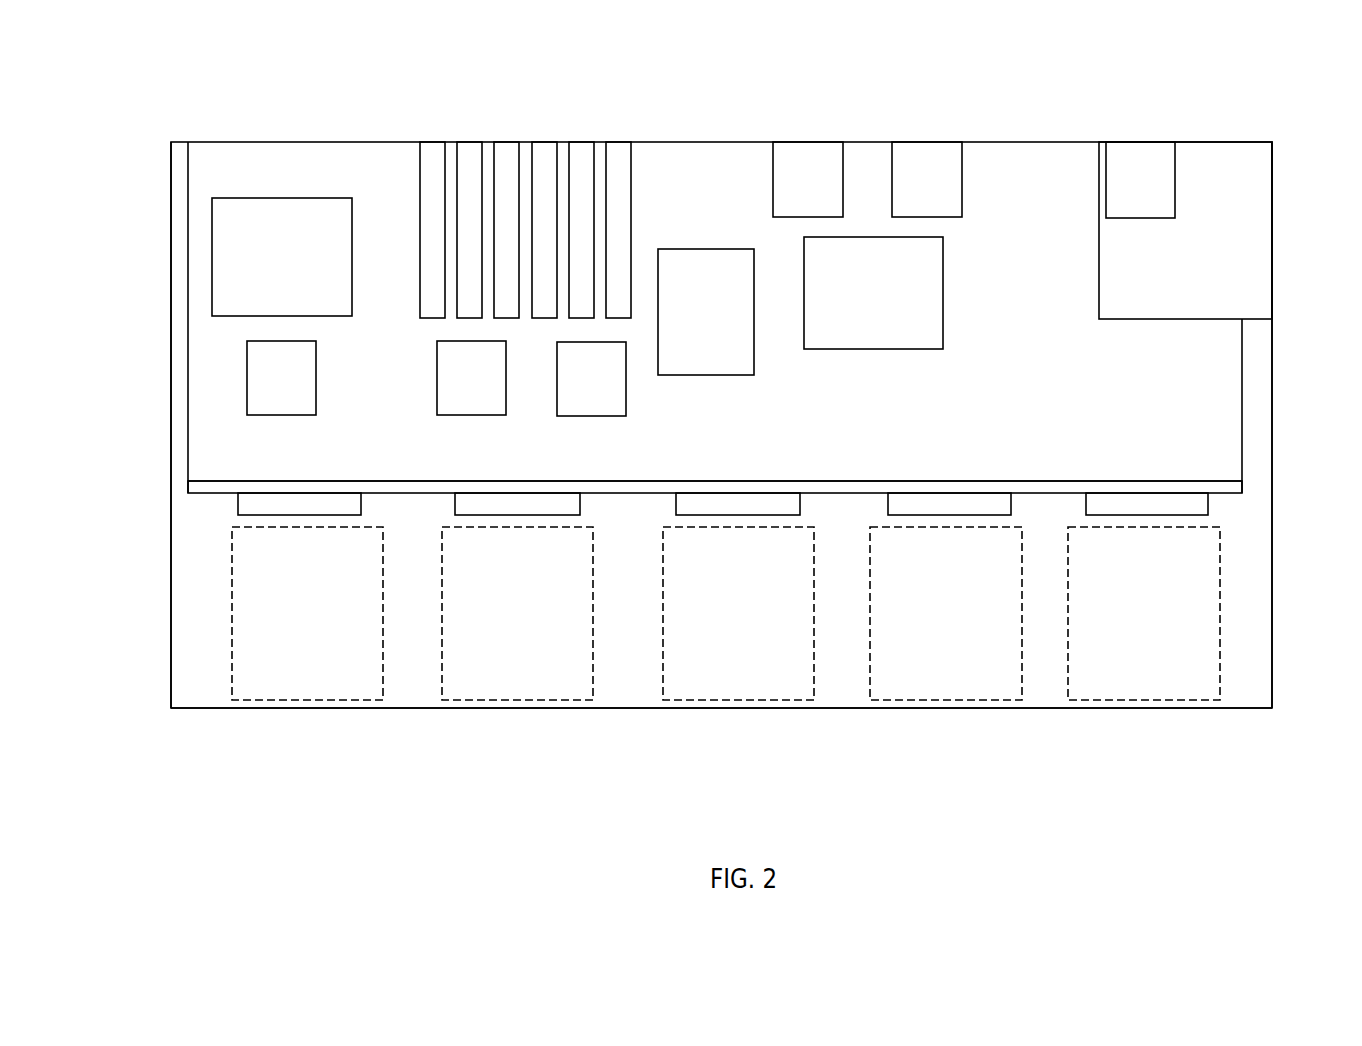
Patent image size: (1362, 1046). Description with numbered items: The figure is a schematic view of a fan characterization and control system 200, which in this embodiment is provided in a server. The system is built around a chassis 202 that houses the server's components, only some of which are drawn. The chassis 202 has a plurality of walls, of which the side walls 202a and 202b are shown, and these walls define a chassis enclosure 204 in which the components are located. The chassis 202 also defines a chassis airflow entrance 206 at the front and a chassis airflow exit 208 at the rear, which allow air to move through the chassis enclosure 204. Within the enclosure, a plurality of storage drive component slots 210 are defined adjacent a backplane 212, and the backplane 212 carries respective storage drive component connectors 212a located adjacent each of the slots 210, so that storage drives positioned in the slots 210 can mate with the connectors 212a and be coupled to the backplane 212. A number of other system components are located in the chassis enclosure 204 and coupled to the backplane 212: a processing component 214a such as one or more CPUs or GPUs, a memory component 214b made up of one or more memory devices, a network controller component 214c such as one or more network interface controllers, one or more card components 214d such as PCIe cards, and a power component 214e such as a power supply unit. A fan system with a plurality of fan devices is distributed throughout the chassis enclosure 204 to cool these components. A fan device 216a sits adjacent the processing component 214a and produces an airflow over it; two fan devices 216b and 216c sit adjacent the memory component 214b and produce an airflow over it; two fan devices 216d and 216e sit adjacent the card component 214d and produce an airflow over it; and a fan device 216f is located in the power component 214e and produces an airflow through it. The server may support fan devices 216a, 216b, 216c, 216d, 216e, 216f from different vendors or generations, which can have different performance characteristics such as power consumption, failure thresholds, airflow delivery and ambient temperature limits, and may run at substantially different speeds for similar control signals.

The fan characterization and control system 200 is at (190, 100).
The chassis 202 is at (171, 142).
The side wall 202a is at (171, 426).
The side wall 202b is at (1272, 328).
The chassis enclosure 204 is at (655, 455).
The chassis airflow entrance 206 is at (537, 715).
The chassis airflow exit 208 is at (989, 105).
The storage drive component slot 210 is at (318, 625).
The backplane 212 is at (483, 481).
The storage drive component connector 212a is at (340, 510).
The processing component 214a is at (303, 270).
The memory component 214b is at (507, 155).
The network controller component 214c is at (730, 326).
The card component 214d is at (896, 306).
The power component 214e is at (1207, 243).
The fan device 216a is at (303, 391).
The fan device 216b is at (494, 391).
The fan device 216c is at (614, 391).
The fan device 216d is at (829, 193).
The fan device 216e is at (950, 193).
The fan device 216f is at (1160, 193).